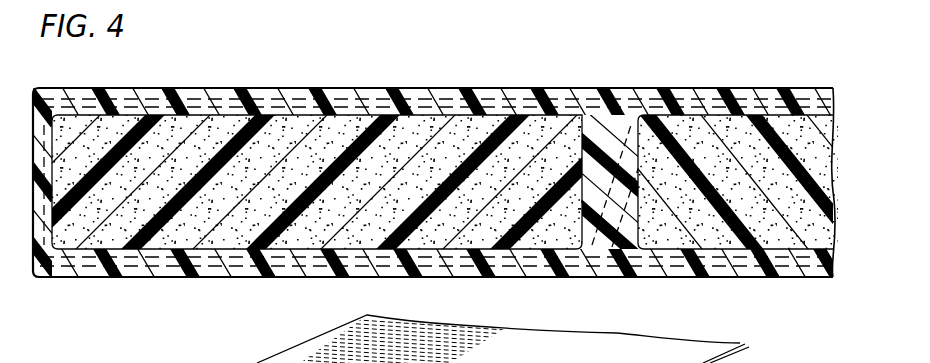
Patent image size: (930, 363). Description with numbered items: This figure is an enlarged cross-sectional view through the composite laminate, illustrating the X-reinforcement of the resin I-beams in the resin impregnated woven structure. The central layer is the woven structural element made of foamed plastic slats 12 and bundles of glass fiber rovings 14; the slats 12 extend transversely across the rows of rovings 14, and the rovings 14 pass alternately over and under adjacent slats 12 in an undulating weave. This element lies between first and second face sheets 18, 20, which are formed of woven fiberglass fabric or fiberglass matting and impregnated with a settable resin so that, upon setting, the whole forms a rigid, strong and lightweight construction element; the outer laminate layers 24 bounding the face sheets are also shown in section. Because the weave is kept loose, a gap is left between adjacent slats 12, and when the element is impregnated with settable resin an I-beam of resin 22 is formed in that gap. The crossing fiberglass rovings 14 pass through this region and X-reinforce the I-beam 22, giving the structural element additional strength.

The foamed plastic slat 12 is at (346, 142).
The bundle of glass fiber rovings 14 is at (195, 96).
The first face sheet 18 is at (457, 98).
The second face sheet 20 is at (222, 280).
The I-beam of resin 22 is at (603, 138).
The laminated skin 24 is at (763, 92).